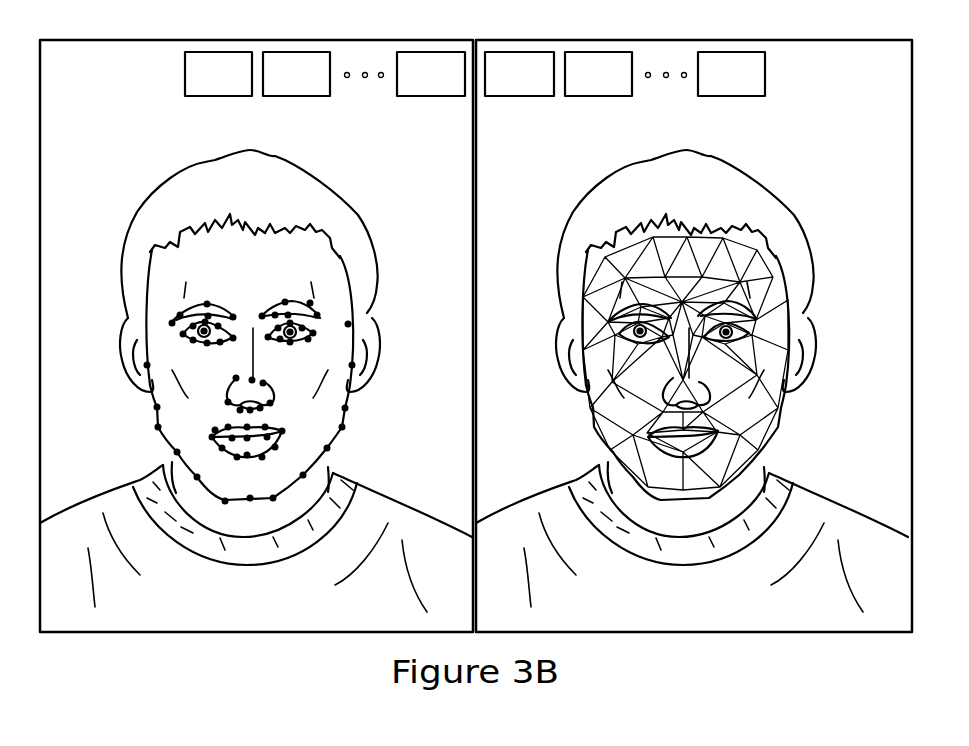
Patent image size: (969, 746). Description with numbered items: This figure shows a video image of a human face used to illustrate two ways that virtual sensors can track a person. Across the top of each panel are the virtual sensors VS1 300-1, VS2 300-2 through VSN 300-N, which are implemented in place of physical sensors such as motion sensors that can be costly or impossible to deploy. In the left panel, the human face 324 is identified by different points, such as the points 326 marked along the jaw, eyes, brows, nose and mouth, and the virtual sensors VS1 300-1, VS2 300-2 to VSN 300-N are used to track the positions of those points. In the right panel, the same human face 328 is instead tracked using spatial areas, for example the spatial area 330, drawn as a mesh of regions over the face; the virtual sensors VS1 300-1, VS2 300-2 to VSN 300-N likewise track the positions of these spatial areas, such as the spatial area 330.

The virtual sensor VS1 300-1 is at (218, 96).
The virtual sensor VS2 300-2 is at (296, 96).
The virtual sensor VSN 300-N is at (431, 96).
The human face 324 is at (136, 210).
The points 326 is at (350, 323).
The human face 328 is at (782, 201).
The spatial area 330 is at (758, 274).